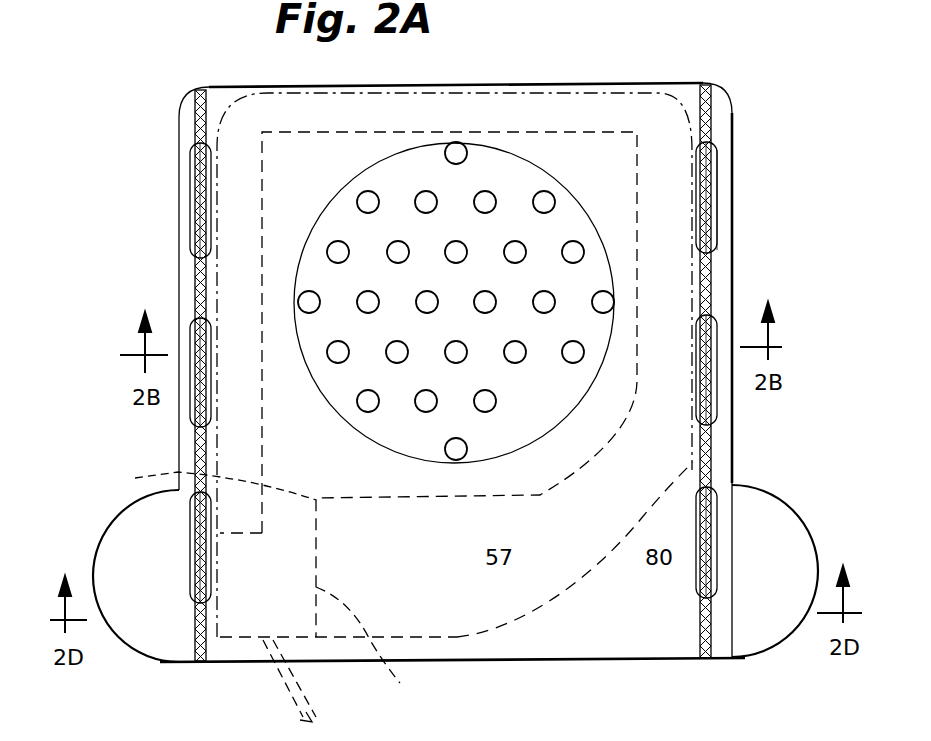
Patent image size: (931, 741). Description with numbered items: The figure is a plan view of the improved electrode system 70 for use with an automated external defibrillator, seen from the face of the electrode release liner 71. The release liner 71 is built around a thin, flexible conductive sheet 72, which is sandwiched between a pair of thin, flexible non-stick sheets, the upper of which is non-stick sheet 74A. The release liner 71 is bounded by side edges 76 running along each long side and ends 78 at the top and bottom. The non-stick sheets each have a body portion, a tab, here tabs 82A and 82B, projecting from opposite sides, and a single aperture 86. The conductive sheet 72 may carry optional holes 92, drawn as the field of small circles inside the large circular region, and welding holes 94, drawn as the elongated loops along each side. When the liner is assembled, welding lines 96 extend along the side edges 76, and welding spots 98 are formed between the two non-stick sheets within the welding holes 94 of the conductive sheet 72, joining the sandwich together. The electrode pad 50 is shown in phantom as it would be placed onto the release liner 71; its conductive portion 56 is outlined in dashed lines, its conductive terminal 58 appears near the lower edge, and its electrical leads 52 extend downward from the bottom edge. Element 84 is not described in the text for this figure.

The electrode pad 50 is at (532, 624).
The electrical leads 52 is at (300, 692).
The conductive portion 56 is at (208, 482).
The conductive terminal 58 is at (377, 641).
The electrode system 70 is at (419, 80).
The electrode release liner 71 is at (571, 84).
The conductive sheet 72 is at (553, 418).
The non-stick sheet 74A is at (163, 650).
The side edges 76 is at (178, 223).
The ends 78 is at (322, 85).
The tab 82A is at (92, 557).
The tab 82B is at (806, 528).
The fastening member 84 is at (717, 183).
The single aperture 86 is at (530, 443).
The optional holes 92 is at (555, 295).
The welding holes 94 is at (190, 180).
The welding lines 96 is at (195, 118).
The welding spots 98 is at (197, 240).